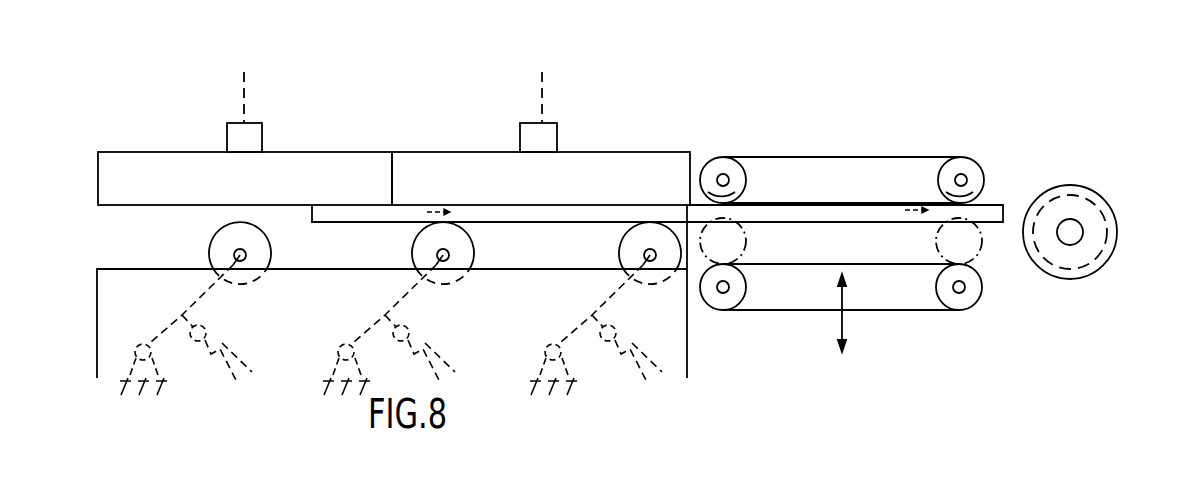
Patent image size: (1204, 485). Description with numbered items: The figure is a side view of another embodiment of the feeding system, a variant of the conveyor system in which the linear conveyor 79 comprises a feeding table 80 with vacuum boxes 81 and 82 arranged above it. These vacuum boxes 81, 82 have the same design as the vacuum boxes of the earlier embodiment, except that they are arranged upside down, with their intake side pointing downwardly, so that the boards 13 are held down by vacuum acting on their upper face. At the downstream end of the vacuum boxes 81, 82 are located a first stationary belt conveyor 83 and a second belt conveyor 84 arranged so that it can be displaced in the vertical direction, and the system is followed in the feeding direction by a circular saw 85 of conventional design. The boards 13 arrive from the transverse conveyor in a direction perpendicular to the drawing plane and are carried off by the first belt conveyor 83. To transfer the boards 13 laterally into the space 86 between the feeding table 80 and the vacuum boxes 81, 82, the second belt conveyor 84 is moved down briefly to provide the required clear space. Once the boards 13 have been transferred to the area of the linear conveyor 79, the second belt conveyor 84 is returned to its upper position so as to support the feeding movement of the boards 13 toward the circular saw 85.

The linear conveyor 79 is at (695, 106).
The feeding table 80 is at (112, 325).
The vacuum box 81 is at (323, 162).
The vacuum box 82 is at (459, 157).
The first stationary belt conveyor 83 is at (855, 163).
The second belt conveyor 84 is at (903, 302).
The circular saw 85 is at (1088, 210).
The space 86 is at (115, 243).
The boards 13 is at (621, 221).